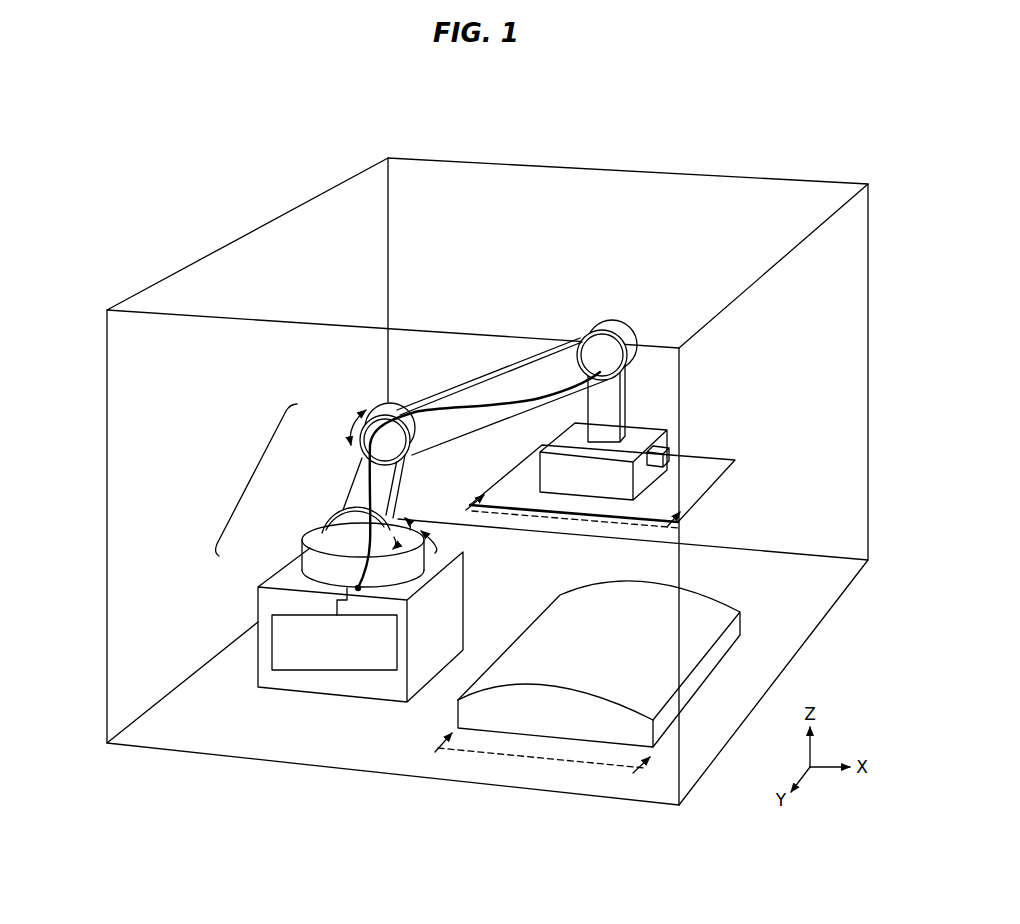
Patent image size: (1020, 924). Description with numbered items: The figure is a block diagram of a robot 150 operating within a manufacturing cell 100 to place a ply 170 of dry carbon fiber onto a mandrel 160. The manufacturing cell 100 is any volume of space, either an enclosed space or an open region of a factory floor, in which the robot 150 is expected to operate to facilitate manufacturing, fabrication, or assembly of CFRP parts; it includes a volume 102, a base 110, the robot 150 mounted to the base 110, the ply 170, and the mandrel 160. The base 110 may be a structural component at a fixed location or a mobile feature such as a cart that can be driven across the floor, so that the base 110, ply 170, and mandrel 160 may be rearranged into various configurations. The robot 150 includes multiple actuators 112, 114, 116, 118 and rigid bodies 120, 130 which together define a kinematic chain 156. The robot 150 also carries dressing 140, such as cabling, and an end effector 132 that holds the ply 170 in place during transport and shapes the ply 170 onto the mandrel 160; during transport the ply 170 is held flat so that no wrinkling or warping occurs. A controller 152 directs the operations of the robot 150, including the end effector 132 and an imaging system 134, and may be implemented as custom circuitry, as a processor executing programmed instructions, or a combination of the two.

The manufacturing cell 100 is at (470, 162).
The volume 102 is at (830, 575).
The base 110 is at (383, 625).
The actuator 112 is at (302, 546).
The actuator 114 is at (331, 524).
The actuator 116 is at (460, 393).
The actuator 118 is at (622, 396).
The rigid body 120 is at (355, 478).
The rigid body 130 is at (487, 375).
The end effector 132 is at (565, 440).
The imaging system 134 is at (670, 452).
The dressing 140 is at (478, 481).
The robot 150 is at (230, 591).
The controller 152 is at (350, 665).
The kinematic chain 156 is at (263, 460).
The mandrel 160 is at (695, 618).
The ply 170 is at (700, 487).